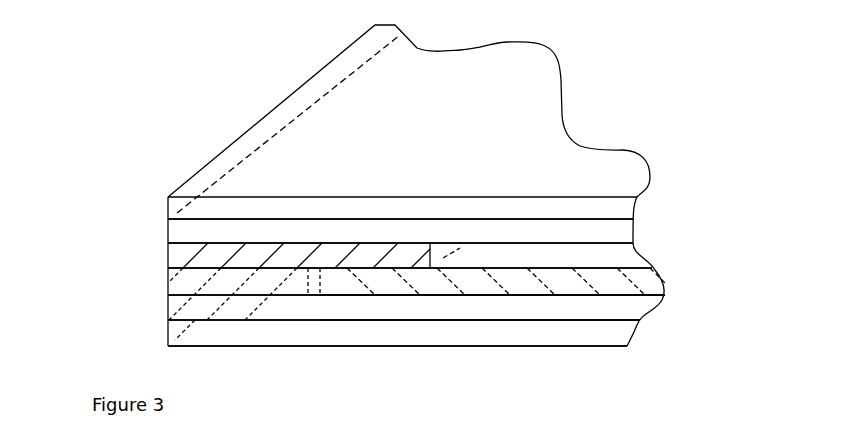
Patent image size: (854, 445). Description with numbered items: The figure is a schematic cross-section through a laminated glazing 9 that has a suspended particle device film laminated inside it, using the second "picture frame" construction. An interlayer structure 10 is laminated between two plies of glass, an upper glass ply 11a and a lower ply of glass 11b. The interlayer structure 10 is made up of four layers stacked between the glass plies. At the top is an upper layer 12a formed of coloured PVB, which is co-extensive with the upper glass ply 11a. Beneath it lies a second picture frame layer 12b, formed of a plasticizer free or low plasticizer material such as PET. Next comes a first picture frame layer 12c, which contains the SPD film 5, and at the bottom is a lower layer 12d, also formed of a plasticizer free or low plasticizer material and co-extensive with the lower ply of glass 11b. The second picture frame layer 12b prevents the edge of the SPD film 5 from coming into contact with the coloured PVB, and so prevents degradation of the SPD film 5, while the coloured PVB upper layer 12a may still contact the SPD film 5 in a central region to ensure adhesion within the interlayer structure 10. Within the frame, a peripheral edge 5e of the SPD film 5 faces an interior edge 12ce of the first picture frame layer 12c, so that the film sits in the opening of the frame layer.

The glazing 9 is at (621, 88).
The interlayer structure 10 is at (148, 215).
The upper glass ply 11a is at (623, 210).
The lower ply of glass 11b is at (625, 337).
The upper layer 12a is at (620, 229).
The second picture frame layer 12b is at (198, 255).
The first picture frame layer 12c is at (240, 270).
The interior edge of the first picture frame layer 12ce is at (309, 283).
The lower layer 12d is at (643, 310).
The SPD film 5 is at (647, 279).
The peripheral edge of the SPD film 5e is at (331, 283).